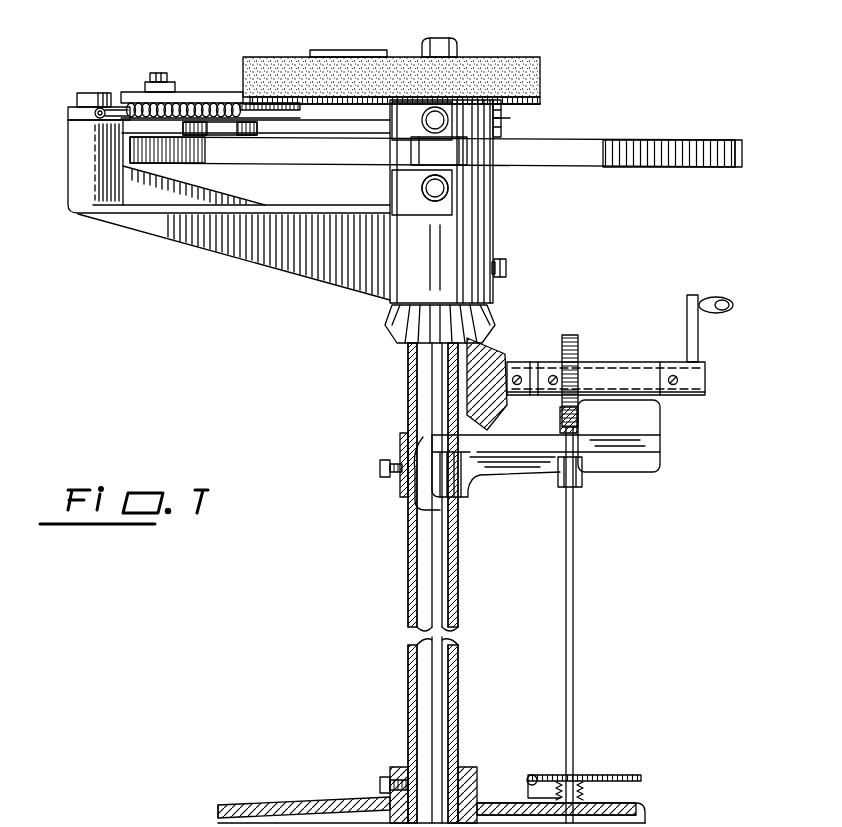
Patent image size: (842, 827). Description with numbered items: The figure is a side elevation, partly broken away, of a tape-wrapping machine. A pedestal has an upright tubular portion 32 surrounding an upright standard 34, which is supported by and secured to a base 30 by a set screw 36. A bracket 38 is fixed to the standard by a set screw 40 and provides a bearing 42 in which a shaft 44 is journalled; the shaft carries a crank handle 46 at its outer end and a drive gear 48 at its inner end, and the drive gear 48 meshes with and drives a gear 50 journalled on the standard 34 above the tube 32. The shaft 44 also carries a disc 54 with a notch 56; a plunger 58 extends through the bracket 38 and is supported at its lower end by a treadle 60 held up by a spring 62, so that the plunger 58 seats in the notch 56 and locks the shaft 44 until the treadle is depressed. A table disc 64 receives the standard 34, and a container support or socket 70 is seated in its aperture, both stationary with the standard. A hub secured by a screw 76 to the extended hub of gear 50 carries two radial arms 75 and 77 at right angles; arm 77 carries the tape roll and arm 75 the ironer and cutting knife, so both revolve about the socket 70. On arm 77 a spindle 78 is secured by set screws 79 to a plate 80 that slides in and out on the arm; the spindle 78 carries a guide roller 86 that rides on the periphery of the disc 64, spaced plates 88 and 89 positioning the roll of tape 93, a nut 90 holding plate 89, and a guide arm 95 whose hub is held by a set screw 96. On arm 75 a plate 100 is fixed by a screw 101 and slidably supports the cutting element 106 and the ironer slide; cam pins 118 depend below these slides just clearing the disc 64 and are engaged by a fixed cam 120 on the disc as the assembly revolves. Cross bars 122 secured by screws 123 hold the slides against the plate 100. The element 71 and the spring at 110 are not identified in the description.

The base 30 is at (282, 803).
The upright tubular portion 32 is at (408, 582).
The upright standard 34 is at (420, 644).
The set screw 36 is at (380, 782).
The bracket 38 is at (630, 472).
The set screw 40 is at (381, 470).
The bearing 42 is at (625, 385).
The shaft 44 is at (612, 366).
The crank handle 46 is at (733, 304).
The drive gear 48 is at (490, 358).
The gear 50 is at (393, 335).
The disc 54 is at (575, 345).
The notch 56 is at (578, 417).
The plunger 58 is at (565, 546).
The treadle 60 is at (605, 775).
The spring 62 is at (584, 790).
The table disc 64 is at (663, 150).
The container support or socket 70 is at (502, 108).
The bearing 71 is at (502, 118).
The arm 75 is at (205, 230).
The screw 76 is at (508, 268).
The arm 77 is at (452, 211).
The spindle 78 is at (440, 38).
The set screws 79 is at (424, 188).
The plate 80 is at (452, 192).
The guide or bearing roller 86 is at (428, 151).
The plate 88 is at (543, 98).
The plate 89 is at (470, 56).
The nut 90 is at (174, 816).
The roll of tape 93 is at (540, 64).
The guide arm 95 is at (502, 133).
The set screw 96 is at (435, 114).
The plate 100 is at (72, 114).
The screw 101 is at (92, 97).
The cutting element 106 is at (242, 100).
The spring 110 is at (196, 103).
The cam pins 118 is at (190, 128).
The fixed cam 120 is at (258, 130).
The cross bars 122 is at (150, 91).
The screws 123 is at (162, 73).